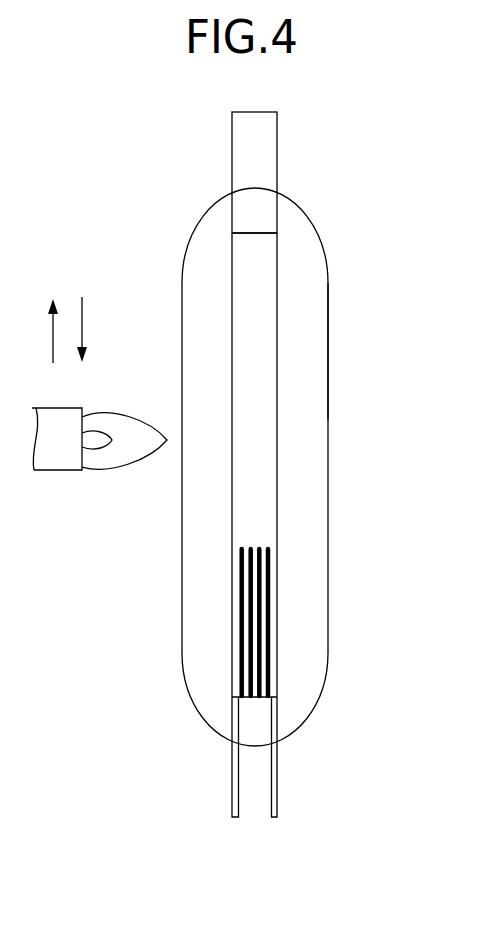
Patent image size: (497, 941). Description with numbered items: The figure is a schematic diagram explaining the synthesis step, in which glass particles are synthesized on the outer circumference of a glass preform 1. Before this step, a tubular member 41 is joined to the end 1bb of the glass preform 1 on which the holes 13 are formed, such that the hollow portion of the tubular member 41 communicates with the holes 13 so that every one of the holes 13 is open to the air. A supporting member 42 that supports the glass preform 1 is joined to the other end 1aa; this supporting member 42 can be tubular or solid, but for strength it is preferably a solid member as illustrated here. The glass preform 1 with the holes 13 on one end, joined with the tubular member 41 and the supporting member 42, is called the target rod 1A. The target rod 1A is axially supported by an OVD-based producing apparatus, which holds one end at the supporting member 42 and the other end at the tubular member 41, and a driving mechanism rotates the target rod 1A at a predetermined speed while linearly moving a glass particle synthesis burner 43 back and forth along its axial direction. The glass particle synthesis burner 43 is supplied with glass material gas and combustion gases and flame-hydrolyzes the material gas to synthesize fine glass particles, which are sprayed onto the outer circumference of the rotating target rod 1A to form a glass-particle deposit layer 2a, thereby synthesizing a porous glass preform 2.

The target rod 1A is at (319, 464).
The supporting member 42 is at (267, 173).
The other end of the glass preform 1aa is at (263, 233).
The glass-particle deposit layer 2a is at (320, 295).
The glass preform 1 is at (277, 367).
The porous glass preform 2 is at (341, 441).
The holes 13 is at (270, 598).
The end of the glass preform 1bb is at (253, 700).
The tubular member 41 is at (277, 780).
The glass particle synthesis burner 43 is at (60, 460).